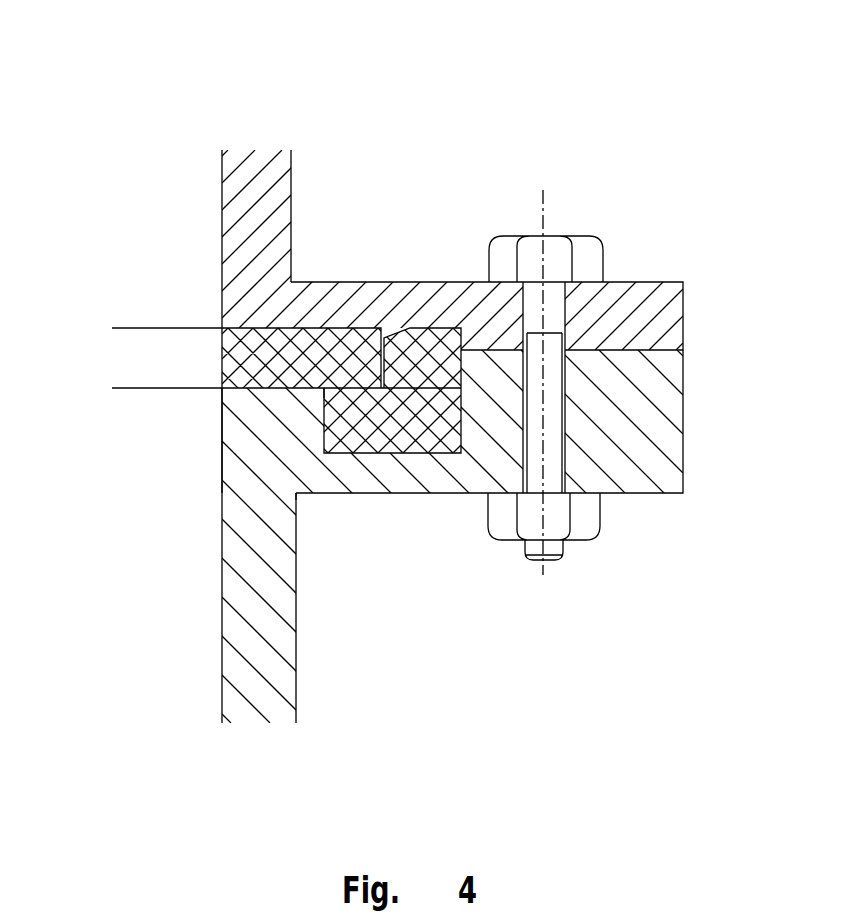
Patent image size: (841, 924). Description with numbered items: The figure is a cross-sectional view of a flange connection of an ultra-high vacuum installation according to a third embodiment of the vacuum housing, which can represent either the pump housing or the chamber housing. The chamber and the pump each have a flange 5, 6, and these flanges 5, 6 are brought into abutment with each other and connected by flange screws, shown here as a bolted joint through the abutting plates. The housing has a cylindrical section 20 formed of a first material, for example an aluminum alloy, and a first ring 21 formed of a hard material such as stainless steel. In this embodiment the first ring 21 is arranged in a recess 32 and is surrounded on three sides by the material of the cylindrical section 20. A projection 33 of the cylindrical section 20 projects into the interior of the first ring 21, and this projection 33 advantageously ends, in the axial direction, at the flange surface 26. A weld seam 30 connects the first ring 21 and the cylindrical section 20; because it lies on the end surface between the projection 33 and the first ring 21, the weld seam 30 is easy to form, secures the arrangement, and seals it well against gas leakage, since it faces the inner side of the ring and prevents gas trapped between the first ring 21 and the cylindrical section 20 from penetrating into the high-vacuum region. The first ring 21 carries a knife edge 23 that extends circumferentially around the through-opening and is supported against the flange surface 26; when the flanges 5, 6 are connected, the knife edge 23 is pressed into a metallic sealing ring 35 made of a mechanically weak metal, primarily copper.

The flange 5 is at (653, 313).
The flange 6 is at (652, 436).
The cylindrical section 20 is at (262, 647).
The first ring 21 is at (343, 413).
The knife edge 23 is at (390, 385).
The flange surface 26 is at (293, 387).
The weld seam 30 is at (325, 397).
The recess 32 is at (378, 453).
The projection 33 is at (265, 422).
The sealing ring 35 is at (263, 351).